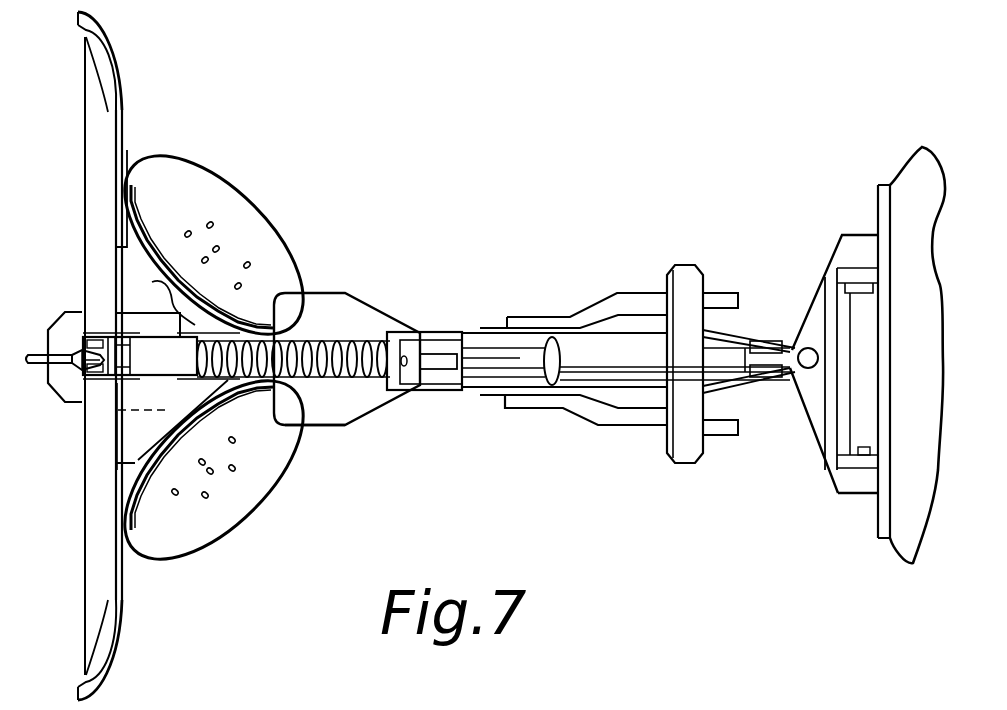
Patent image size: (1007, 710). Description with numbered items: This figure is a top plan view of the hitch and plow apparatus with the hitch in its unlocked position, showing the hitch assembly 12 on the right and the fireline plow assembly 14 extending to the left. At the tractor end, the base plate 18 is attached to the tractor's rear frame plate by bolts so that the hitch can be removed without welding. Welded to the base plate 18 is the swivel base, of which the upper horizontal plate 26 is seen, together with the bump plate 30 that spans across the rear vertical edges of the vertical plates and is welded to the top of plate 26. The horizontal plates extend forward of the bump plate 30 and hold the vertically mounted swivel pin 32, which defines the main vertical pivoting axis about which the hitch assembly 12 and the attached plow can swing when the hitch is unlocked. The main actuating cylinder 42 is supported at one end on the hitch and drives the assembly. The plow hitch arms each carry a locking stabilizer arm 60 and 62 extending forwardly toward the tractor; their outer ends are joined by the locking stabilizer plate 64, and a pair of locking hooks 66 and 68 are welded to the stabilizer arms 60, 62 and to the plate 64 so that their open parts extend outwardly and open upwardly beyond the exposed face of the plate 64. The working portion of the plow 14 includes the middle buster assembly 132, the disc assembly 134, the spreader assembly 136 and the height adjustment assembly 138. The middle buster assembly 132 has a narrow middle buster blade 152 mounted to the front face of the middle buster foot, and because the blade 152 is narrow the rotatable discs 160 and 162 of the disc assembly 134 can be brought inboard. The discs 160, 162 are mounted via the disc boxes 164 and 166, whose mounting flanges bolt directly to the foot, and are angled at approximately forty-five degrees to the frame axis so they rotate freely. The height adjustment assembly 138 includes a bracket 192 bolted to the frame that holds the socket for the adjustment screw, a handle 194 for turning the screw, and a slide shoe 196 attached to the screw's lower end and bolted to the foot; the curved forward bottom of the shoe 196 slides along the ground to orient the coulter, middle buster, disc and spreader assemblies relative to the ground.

The hitch assembly 12 is at (713, 192).
The fireline plow assembly 14 is at (326, 172).
The base plate 18 is at (878, 507).
The upper horizontal plate 26 is at (850, 493).
The bump plate 30 is at (832, 455).
The swivel pin 32 is at (808, 346).
The main actuating cylinder 42 is at (616, 359).
The locking stabilizer arm 60 is at (618, 428).
The locking stabilizer arm 62 is at (632, 293).
The locking stabilizer plate 64 is at (692, 448).
The locking hook 66 is at (740, 430).
The locking hook 68 is at (722, 293).
The middle buster assembly 132 is at (364, 300).
The disc assembly 134 is at (187, 167).
The spreader assembly 136 is at (118, 72).
The height adjustment assembly 138 is at (46, 333).
The middle buster blade 152 is at (340, 410).
The rotatable disc 160 is at (183, 539).
The rotatable disc 162 is at (188, 210).
The disc box 164 is at (163, 437).
The disc box 166 is at (152, 273).
The bracket 192 is at (125, 383).
The handle 194 is at (33, 366).
The slide shoe 196 is at (68, 397).